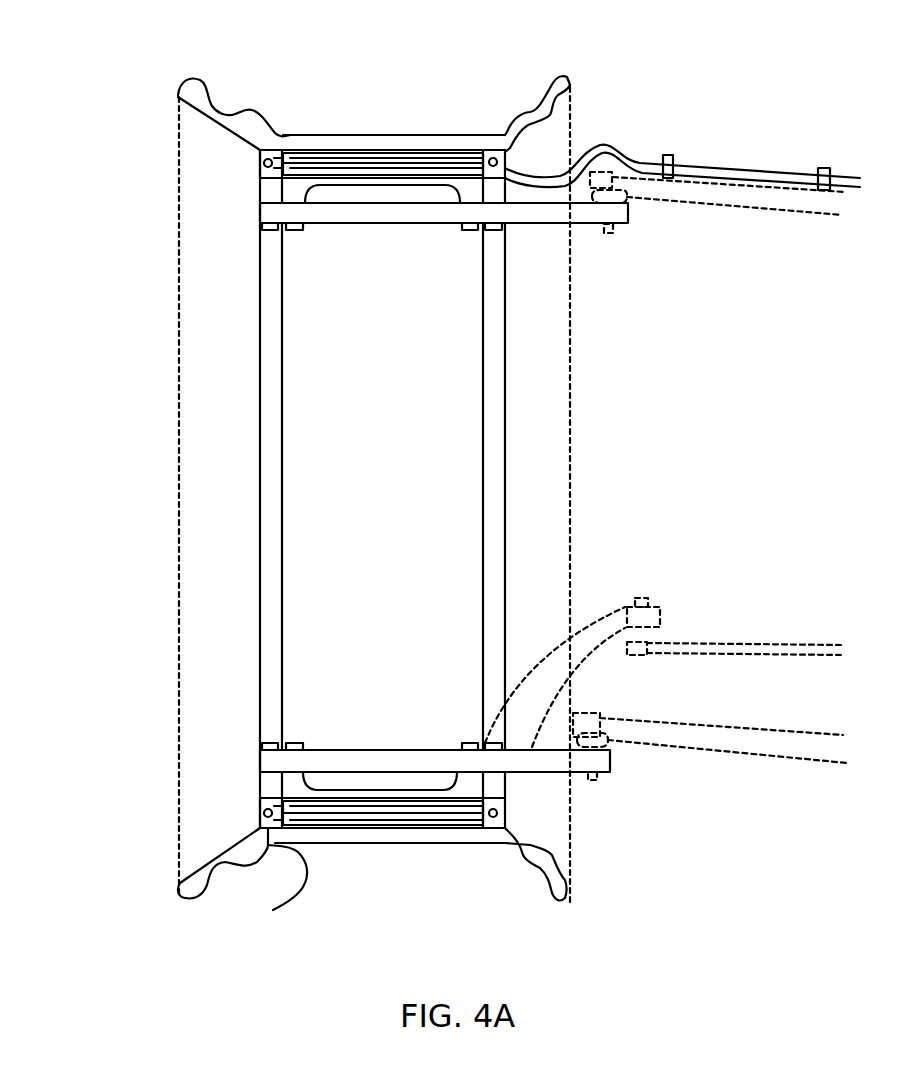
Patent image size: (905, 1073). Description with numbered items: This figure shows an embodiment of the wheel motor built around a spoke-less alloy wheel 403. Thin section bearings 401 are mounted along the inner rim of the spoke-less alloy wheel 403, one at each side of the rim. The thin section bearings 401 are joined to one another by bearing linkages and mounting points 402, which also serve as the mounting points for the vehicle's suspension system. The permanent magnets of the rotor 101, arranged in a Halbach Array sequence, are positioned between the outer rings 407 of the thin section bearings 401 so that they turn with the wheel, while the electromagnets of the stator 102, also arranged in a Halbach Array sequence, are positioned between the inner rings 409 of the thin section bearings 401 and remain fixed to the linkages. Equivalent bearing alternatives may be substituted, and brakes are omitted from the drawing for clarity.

The permanent magnets of the rotor 101 is at (417, 823).
The electromagnets of the stator 102 is at (505, 807).
The thin section bearings 401 is at (270, 157).
The bearing linkages and mounting points 402 is at (403, 217).
The spoke-less alloy wheel 403 is at (233, 847).
The outer rings of the thin section bearings 407 is at (400, 807).
The inner rings of the thin section bearings 409 is at (480, 168).